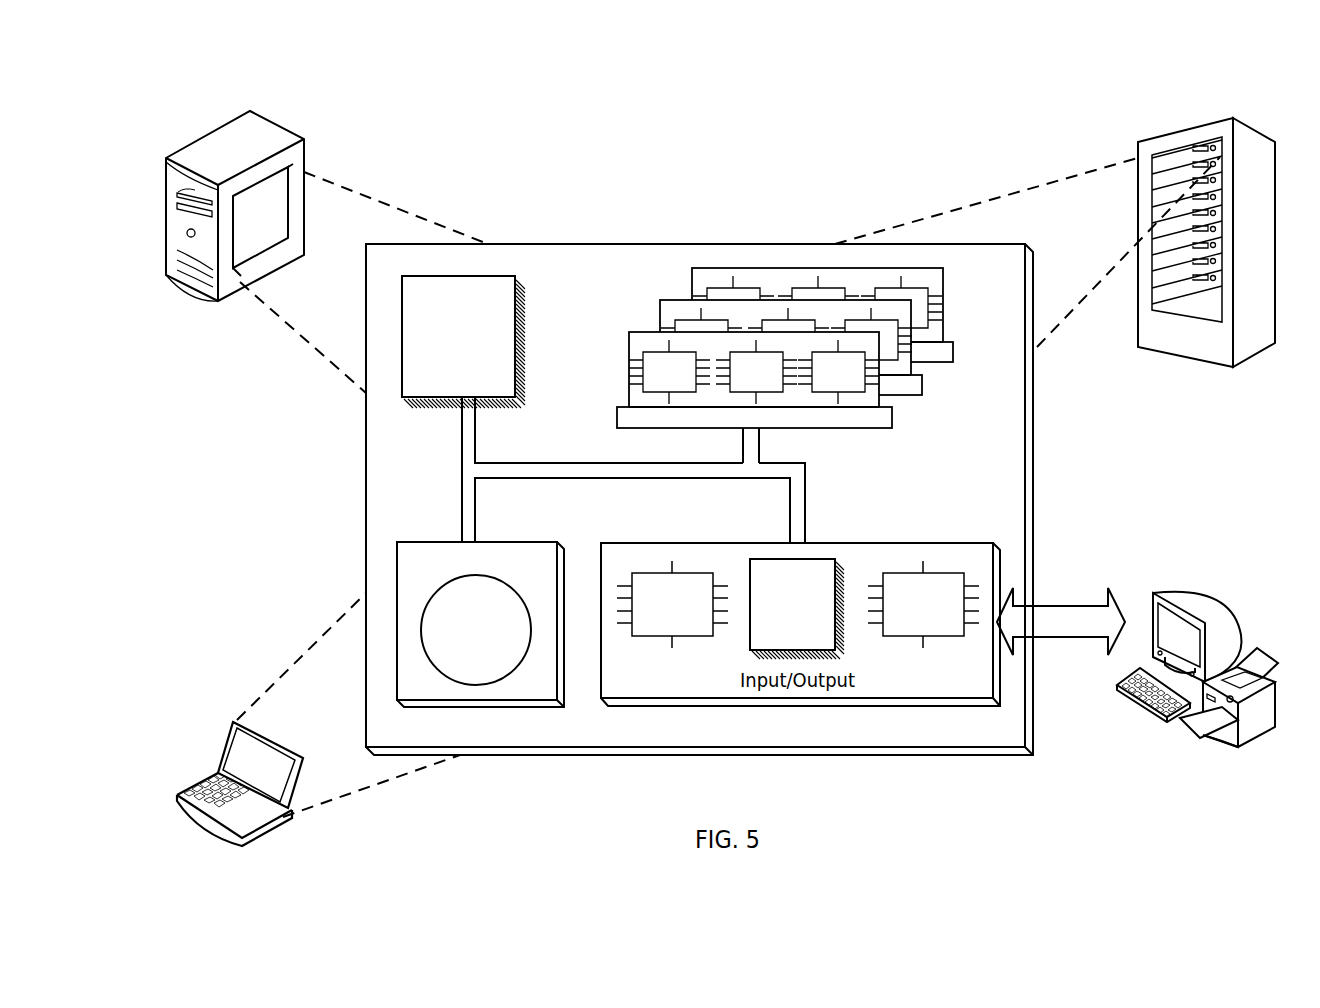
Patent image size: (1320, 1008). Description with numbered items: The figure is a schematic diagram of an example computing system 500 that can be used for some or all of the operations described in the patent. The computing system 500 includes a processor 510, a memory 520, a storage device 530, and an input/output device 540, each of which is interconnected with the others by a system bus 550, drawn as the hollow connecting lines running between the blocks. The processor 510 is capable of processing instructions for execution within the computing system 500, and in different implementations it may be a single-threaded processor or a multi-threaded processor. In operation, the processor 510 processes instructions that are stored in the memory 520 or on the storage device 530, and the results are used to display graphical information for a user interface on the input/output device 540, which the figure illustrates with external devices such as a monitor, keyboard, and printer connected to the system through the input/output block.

The computing system 500 is at (168, 86).
The processor 510 is at (498, 388).
The memory 520 is at (952, 395).
The storage device 530 is at (546, 691).
The input/output device 540 is at (1152, 593).
The system bus 550 is at (628, 479).